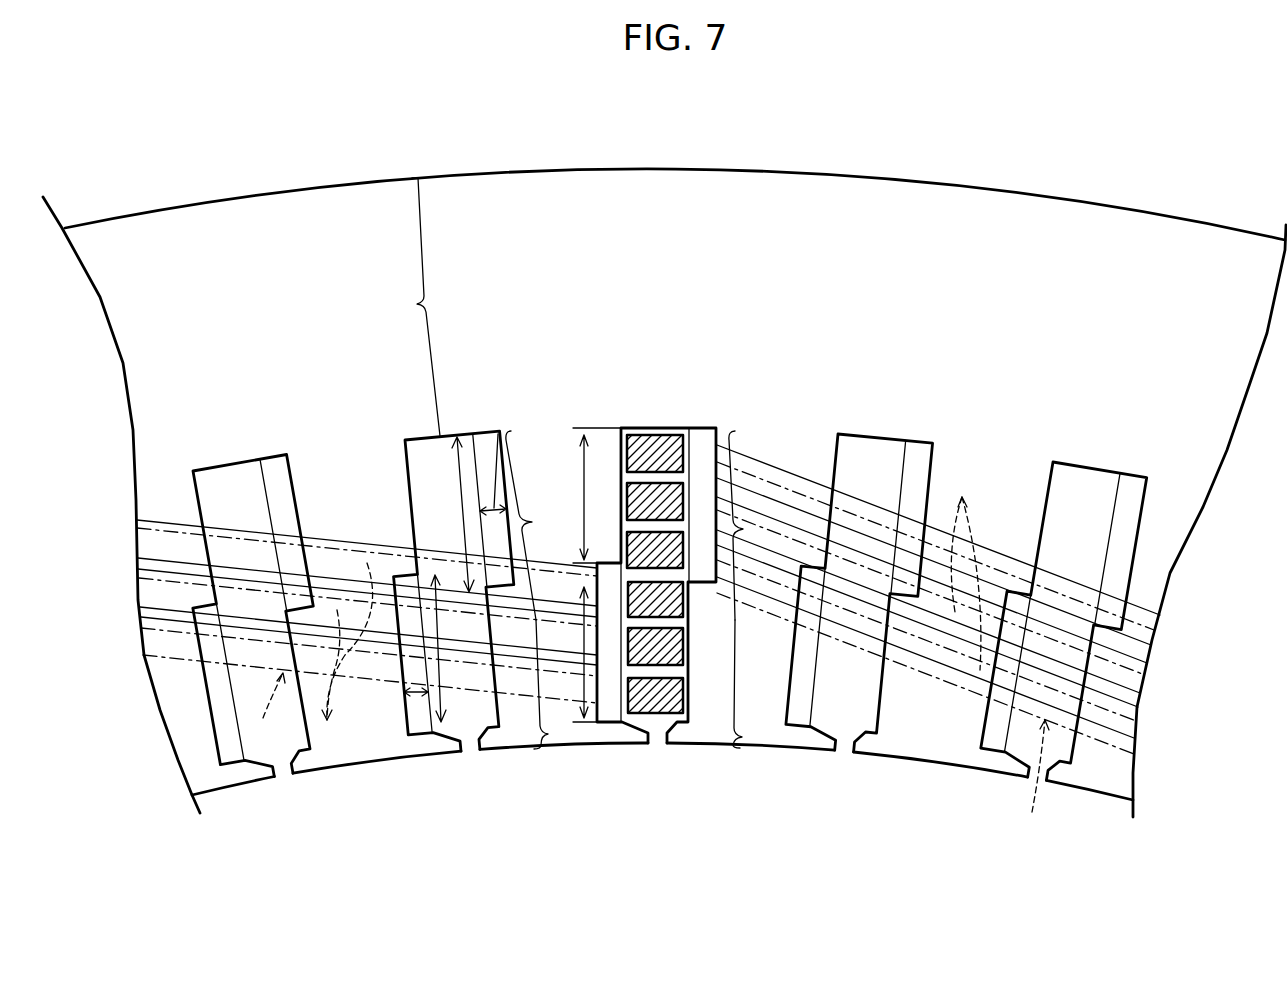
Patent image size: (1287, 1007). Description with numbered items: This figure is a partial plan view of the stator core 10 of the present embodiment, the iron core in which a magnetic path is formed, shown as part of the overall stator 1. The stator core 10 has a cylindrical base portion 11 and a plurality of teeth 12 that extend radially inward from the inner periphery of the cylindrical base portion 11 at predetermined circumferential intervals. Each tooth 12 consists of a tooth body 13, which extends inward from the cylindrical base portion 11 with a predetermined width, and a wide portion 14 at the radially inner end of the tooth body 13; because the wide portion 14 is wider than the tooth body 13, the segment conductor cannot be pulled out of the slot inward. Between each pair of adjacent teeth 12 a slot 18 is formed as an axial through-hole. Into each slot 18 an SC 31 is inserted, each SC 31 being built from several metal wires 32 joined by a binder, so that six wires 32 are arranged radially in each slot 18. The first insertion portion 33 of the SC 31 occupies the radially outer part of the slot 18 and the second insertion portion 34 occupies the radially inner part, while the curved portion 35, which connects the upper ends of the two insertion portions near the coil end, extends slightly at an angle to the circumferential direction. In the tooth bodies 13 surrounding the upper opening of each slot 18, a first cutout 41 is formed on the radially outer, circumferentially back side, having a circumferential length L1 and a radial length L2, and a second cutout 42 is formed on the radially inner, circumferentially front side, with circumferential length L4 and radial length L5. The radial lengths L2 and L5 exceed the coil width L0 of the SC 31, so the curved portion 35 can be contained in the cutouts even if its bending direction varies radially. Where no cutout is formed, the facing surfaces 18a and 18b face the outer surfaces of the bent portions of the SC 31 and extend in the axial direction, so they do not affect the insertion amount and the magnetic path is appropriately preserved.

The rotating electric machine stator 1 is at (672, 140).
The stator core 10 is at (809, 160).
The cylindrical base portion 11 is at (411, 307).
The tooth 12 is at (349, 791).
The tooth body 13 is at (641, 525).
The wide portion 14 is at (655, 686).
The slot 18 is at (404, 462).
The facing surface 18a is at (404, 497).
The facing surface 18b is at (498, 718).
The SC 31 is at (646, 759).
The wire 32 is at (646, 610).
The first insertion portion 33 is at (661, 540).
The second insertion portion 34 is at (636, 697).
The curved portion 35 is at (385, 542).
The first cutout 41 is at (485, 431).
The second cutout 42 is at (423, 750).
The coil width L0 is at (584, 647).
The length of the first cutout in the circumferential direction L1 is at (500, 432).
The length of the first cutout in the radial direction L2 is at (458, 528).
The length of the second cutout in the circumferential direction L4 is at (407, 700).
The length of the second cutout in the radial direction L5 is at (445, 663).